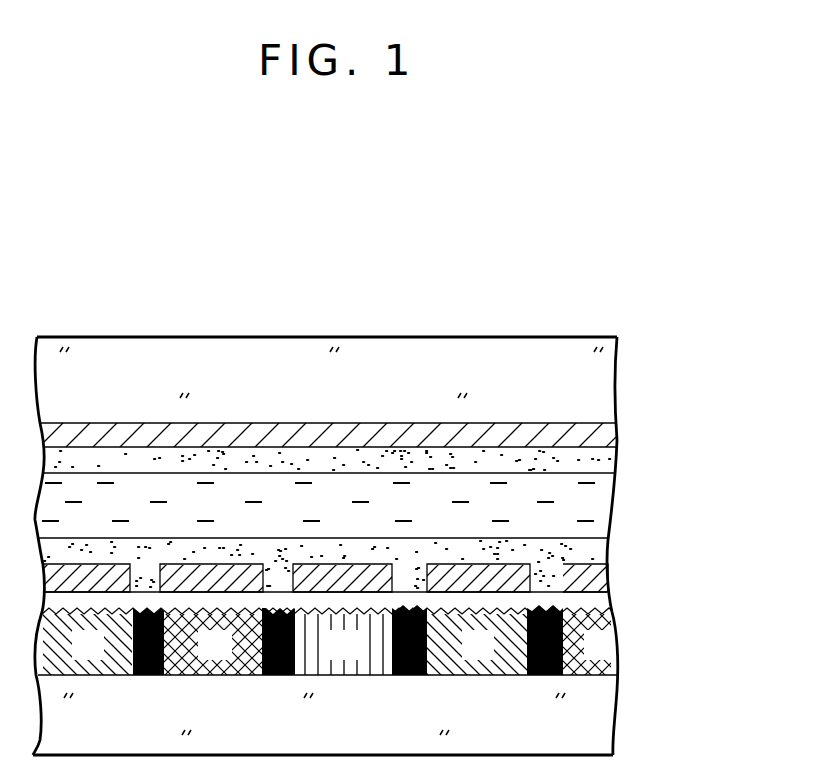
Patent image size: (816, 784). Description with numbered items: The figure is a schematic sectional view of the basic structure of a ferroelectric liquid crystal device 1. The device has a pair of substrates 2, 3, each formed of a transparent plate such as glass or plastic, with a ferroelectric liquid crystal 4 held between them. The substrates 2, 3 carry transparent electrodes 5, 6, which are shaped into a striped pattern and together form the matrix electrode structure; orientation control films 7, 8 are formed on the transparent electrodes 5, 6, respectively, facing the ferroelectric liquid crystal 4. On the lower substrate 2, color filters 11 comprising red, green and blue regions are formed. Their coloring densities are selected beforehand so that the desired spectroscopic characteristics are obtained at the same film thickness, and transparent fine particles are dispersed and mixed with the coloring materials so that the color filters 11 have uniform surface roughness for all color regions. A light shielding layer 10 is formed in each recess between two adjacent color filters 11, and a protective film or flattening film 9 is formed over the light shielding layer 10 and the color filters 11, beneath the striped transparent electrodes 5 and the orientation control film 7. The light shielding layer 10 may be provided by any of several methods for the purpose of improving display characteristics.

The ferroelectric liquid crystal device 1 is at (567, 336).
The substrate 2 is at (600, 732).
The substrate 3 is at (598, 388).
The ferroelectric liquid crystal 4 is at (598, 507).
The transparent electrode 5 is at (605, 578).
The transparent electrode 6 is at (606, 437).
The orientation control film 7 is at (608, 542).
The orientation control film 8 is at (610, 462).
The protective film or flattening film 9 is at (608, 603).
The light shielding layer 10 is at (563, 677).
The color filters 11 is at (612, 638).